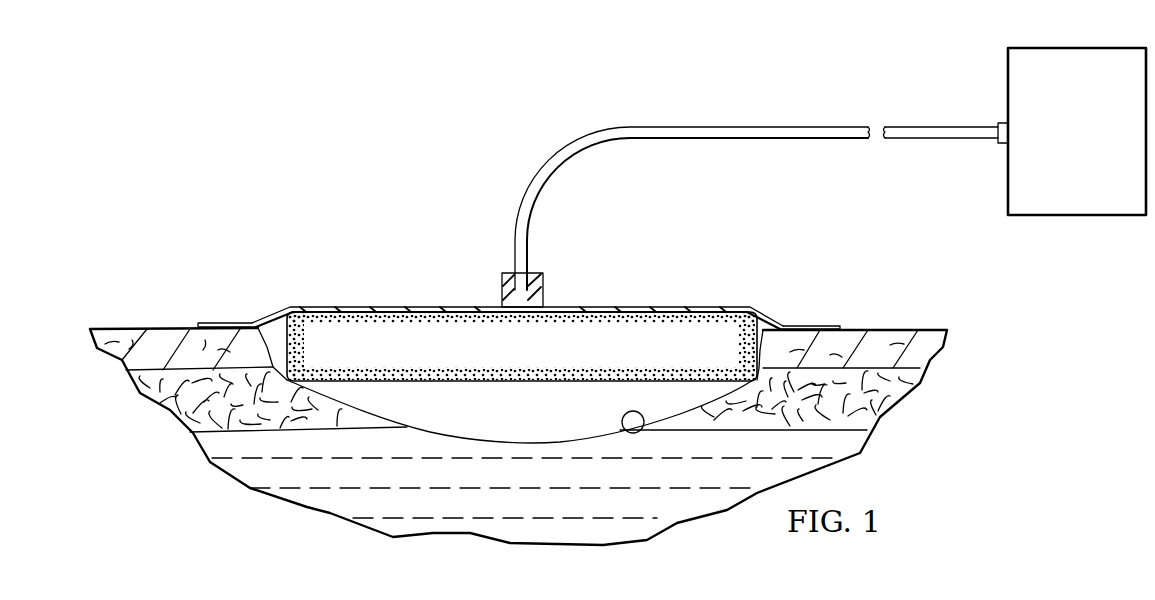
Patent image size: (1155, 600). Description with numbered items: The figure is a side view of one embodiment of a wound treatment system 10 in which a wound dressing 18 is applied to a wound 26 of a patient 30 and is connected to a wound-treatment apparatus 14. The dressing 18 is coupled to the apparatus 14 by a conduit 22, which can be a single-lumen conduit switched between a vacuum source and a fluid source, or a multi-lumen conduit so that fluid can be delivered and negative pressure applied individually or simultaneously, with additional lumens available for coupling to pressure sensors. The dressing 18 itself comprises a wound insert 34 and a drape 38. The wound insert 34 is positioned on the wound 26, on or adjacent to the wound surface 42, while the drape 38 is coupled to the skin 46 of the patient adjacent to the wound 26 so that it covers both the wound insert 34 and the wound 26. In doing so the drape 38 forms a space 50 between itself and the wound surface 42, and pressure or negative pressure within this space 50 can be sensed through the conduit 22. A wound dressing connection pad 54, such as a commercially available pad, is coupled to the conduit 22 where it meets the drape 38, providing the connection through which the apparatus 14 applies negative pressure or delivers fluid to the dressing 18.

The wound treatment system 10 is at (366, 136).
The wound-treatment apparatus 14 is at (1062, 145).
The wound dressing 18 is at (366, 267).
The conduit 22 is at (757, 125).
The wound 26 is at (426, 437).
The patient 30 is at (933, 326).
The wound insert 34 is at (509, 359).
The drape 38 is at (728, 307).
The wound surface 42 is at (633, 433).
The skin 46 is at (157, 328).
The space 50 is at (765, 322).
The wound dressing connection pad 54 is at (545, 284).